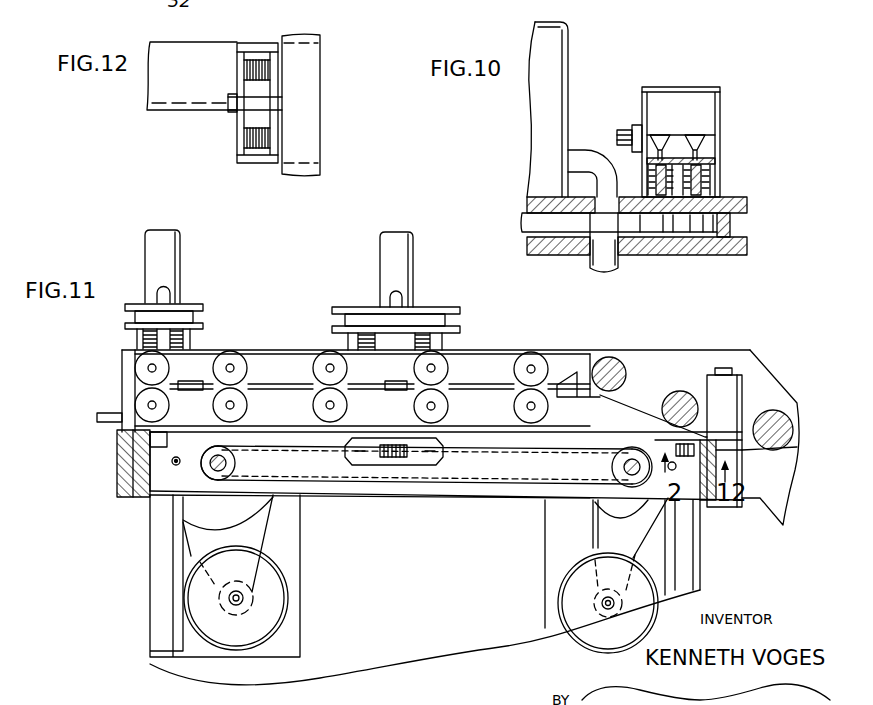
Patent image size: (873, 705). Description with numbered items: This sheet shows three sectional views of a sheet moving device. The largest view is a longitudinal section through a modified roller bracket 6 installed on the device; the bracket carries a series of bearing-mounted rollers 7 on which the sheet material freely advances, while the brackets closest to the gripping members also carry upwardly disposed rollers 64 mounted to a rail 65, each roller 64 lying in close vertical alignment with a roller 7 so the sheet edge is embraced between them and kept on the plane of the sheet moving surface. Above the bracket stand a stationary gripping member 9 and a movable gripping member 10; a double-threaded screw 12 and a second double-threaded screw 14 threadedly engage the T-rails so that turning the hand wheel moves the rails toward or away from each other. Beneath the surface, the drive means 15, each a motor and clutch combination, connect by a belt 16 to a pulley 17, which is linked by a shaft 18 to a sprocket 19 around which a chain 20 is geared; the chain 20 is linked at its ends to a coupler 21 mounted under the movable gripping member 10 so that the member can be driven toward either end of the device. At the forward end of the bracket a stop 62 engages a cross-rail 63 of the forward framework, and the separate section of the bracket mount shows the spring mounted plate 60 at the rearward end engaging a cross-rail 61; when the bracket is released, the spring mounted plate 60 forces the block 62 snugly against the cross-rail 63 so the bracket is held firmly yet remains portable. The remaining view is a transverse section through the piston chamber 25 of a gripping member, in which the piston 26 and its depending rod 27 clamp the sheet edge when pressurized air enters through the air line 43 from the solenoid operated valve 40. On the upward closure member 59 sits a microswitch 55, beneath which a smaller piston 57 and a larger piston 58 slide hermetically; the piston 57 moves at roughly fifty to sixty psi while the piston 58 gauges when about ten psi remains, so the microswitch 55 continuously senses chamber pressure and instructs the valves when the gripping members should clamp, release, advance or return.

In FIG. 12, the roller bracket 6 is at (190, 96).
In FIG. 11, the roller 7 is at (447, 413).
In FIG. 11, the stationary gripping member 9 is at (200, 283).
In FIG. 11, the movable gripping member 10 is at (430, 296).
In FIG. 11, the double-threaded screw 12 is at (174, 464).
In FIG. 11, the second double-threaded screw 14 is at (700, 518).
In FIG. 11, the drive means 15 is at (204, 487).
In FIG. 11, the belt 16 is at (271, 514).
In FIG. 11, the pulley 17 is at (256, 422).
In FIG. 11, the shaft 18 is at (240, 468).
In FIG. 11, the sprocket 19 is at (243, 481).
In FIG. 11, the chain 20 is at (400, 486).
In FIG. 11, the coupler 21 is at (436, 459).
In FIG. 10, the piston chamber 25 is at (733, 228).
In FIG. 10, the piston 26 is at (705, 255).
In FIG. 10, the rod 27 is at (607, 269).
In FIG. 10, the solenoid operated valve 40 is at (571, 30).
In FIG. 10, the air line 43 is at (587, 148).
In FIG. 10, the microswitch 55 is at (720, 86).
In FIG. 10, the piston 57 is at (654, 183).
In FIG. 10, the piston 58 is at (702, 178).
In FIG. 10, the upward closure member 59 is at (740, 199).
In FIG. 12, the spring mounted plate 60 is at (280, 84).
In FIG. 11, the spring mounted plate 60 is at (797, 458).
In FIG. 12, the cross-rail 61 is at (310, 133).
In FIG. 11, the cross-rail 61 is at (713, 506).
In FIG. 11, the stop 62 is at (150, 437).
In FIG. 11, the cross-rail 63 is at (135, 470).
In FIG. 11, the upwardly disposed rollers 64 is at (444, 362).
In FIG. 11, the rail 65 is at (497, 363).